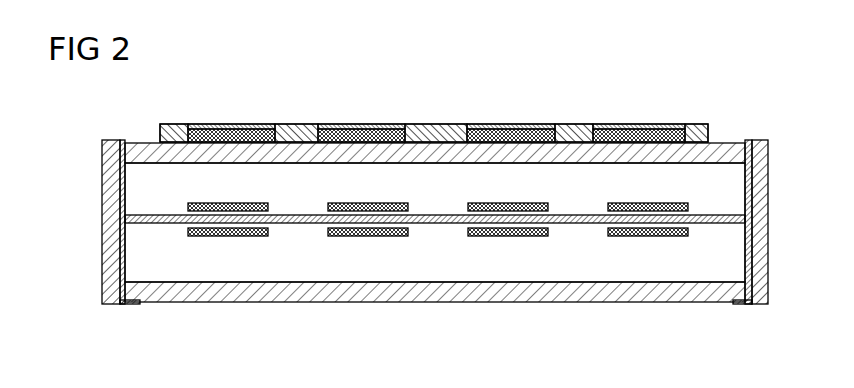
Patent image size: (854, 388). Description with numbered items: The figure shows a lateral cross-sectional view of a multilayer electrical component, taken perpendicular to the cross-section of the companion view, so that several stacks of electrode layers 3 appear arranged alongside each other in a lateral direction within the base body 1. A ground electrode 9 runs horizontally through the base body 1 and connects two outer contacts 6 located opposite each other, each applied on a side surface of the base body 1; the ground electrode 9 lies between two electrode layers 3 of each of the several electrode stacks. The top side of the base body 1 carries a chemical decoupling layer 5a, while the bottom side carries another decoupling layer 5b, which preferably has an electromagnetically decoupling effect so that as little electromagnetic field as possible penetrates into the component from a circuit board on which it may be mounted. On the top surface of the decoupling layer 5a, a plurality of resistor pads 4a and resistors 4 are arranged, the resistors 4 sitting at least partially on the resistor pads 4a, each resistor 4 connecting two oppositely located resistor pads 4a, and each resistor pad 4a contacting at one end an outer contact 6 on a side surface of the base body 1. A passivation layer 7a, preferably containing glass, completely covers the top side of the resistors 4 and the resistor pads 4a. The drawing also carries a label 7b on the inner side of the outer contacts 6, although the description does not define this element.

The base body 1 is at (135, 190).
The electrode layers 3 is at (258, 200).
The resistors 4 is at (497, 133).
The resistor pads 4a is at (540, 133).
The chemical decoupling layer 5a is at (720, 150).
The decoupling layer 5b is at (640, 290).
The outer contacts 6 is at (108, 258).
The passivation layer 7a is at (587, 133).
The inner liner 7b is at (120, 172).
The ground electrode 9 is at (736, 218).